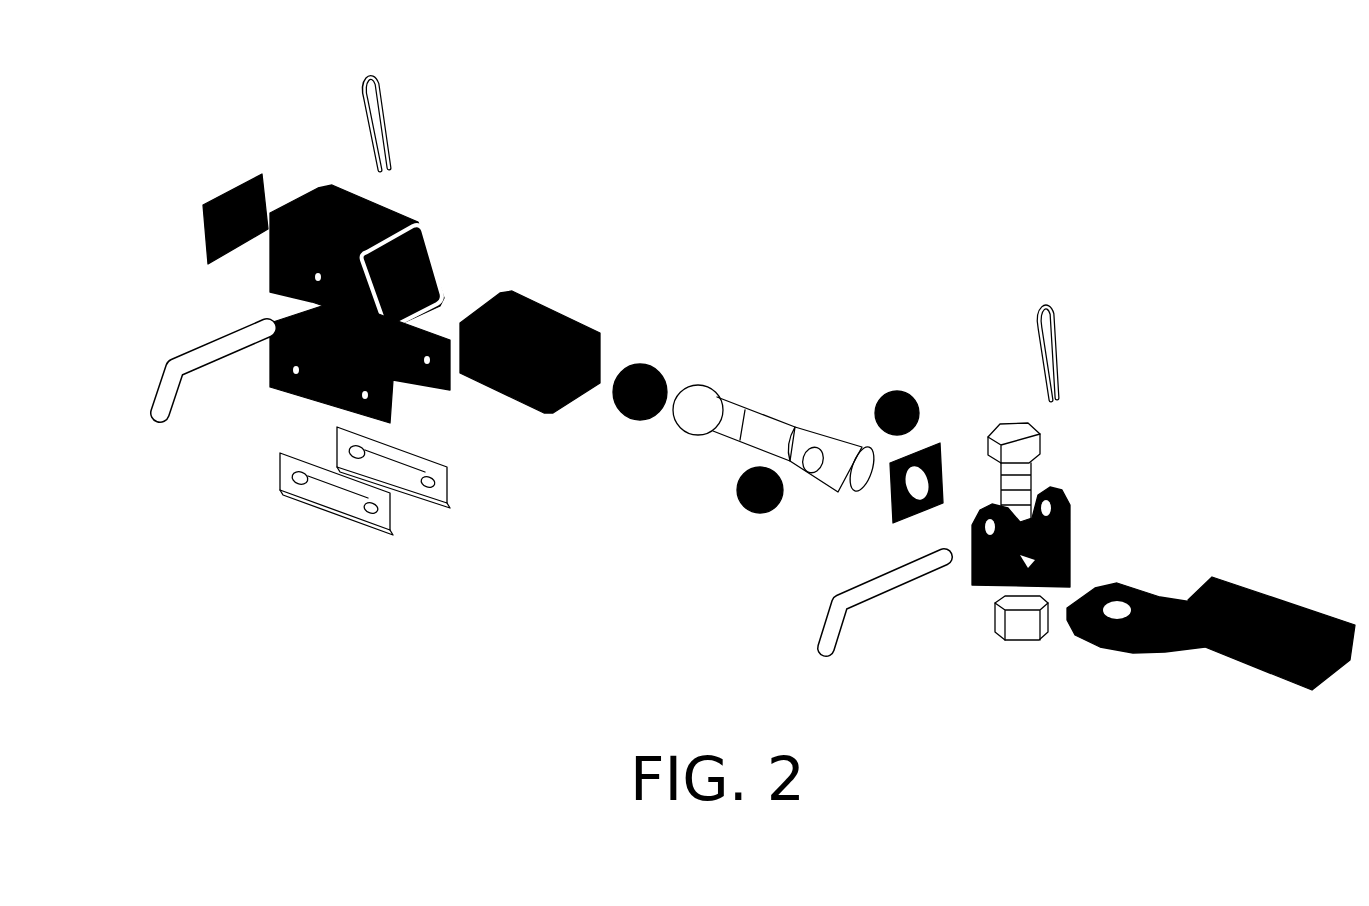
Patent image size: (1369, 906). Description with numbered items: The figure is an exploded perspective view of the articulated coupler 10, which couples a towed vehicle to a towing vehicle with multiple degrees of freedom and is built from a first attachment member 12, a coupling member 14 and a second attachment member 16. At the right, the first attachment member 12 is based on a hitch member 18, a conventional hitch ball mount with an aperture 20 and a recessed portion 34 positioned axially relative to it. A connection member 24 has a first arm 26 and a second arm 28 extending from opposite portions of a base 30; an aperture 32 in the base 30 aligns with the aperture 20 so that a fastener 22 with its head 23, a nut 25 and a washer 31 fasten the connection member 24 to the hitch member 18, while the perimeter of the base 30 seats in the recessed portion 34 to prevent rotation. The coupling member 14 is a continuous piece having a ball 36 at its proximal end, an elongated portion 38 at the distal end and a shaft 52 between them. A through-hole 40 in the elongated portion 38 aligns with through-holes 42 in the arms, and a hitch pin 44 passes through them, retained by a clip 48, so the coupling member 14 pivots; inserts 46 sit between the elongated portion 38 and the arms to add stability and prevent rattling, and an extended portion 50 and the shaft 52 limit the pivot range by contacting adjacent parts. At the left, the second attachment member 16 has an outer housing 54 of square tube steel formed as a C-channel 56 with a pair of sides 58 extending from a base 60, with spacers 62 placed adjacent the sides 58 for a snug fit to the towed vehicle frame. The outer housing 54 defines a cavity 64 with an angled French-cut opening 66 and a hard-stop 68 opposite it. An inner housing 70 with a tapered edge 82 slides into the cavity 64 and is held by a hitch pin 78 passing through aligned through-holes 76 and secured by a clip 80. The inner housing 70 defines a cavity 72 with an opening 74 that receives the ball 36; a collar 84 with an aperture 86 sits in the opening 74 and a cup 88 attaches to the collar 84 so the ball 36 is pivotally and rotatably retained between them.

The articulated coupler 10 is at (1160, 155).
The first attachment member 12 is at (1232, 425).
The coupling member 14 is at (810, 322).
The second attachment member 16 is at (425, 160).
The hitch member 18 is at (1253, 597).
The aperture 20 is at (1100, 644).
The fastener 22 is at (1033, 470).
The head 23 is at (1038, 436).
The connection member 24 is at (1165, 485).
The nut 25 is at (1020, 633).
The first arm 26 is at (990, 584).
The second arm 28 is at (1067, 521).
The base 30 is at (1057, 578).
The washer 31 is at (997, 604).
The aperture 32 is at (1067, 554).
The recessed portion 34 is at (1147, 597).
The ball 36 is at (692, 420).
The elongated portion 38 is at (818, 436).
The through-hole 40 is at (814, 470).
The through-holes 42 is at (985, 522).
The hitch pin 44 is at (880, 590).
The inserts 46 is at (760, 512).
The clip 48 is at (1060, 350).
The extended portion 50 is at (838, 475).
The shaft 52 is at (760, 428).
The outer housing 54 is at (334, 192).
The C-channel 56 is at (300, 398).
The sides 58 is at (320, 405).
The base 60 is at (293, 318).
The spacers 62 is at (350, 510).
The cavity 64 is at (414, 232).
The opening 66 is at (434, 277).
The hard-stop 68 is at (208, 195).
The inner housing 70 is at (540, 310).
The cavity 72 is at (597, 332).
The opening 74 is at (553, 412).
The through-holes 76 is at (268, 290).
The hitch pin 78 is at (197, 362).
The clip 80 is at (392, 92).
The tapered edge 82 is at (497, 296).
The collar 84 is at (937, 448).
The aperture 86 is at (920, 481).
The cup 88 is at (641, 363).